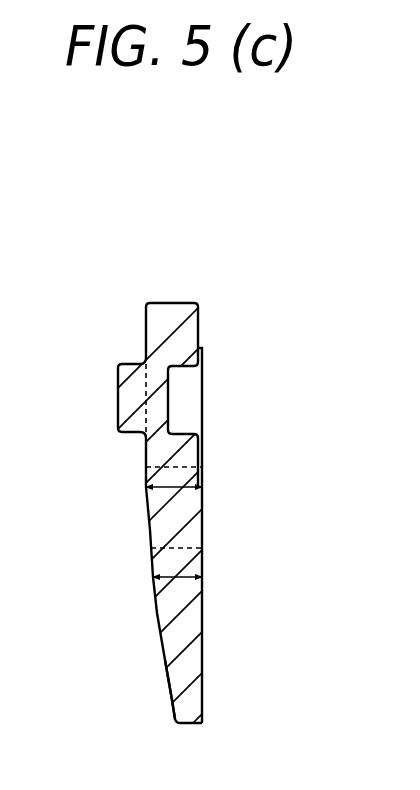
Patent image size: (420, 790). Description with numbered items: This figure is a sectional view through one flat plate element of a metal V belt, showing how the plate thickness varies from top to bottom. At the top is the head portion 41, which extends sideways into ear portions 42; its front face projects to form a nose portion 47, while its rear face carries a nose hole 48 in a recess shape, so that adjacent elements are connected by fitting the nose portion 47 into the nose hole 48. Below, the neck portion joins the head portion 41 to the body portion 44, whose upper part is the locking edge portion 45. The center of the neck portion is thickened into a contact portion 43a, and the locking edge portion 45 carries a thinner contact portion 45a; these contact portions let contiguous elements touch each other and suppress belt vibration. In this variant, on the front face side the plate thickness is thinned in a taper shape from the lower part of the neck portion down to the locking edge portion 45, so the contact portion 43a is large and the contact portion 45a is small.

The head portion 41 is at (175, 312).
The ear portion 42 is at (207, 368).
The contact portion 43a is at (203, 497).
The body portion 44 is at (190, 655).
The locking edge portion 45 is at (157, 613).
The contact portion 45a is at (203, 585).
The nose portion 47 is at (118, 369).
The nose hole 48 is at (186, 403).